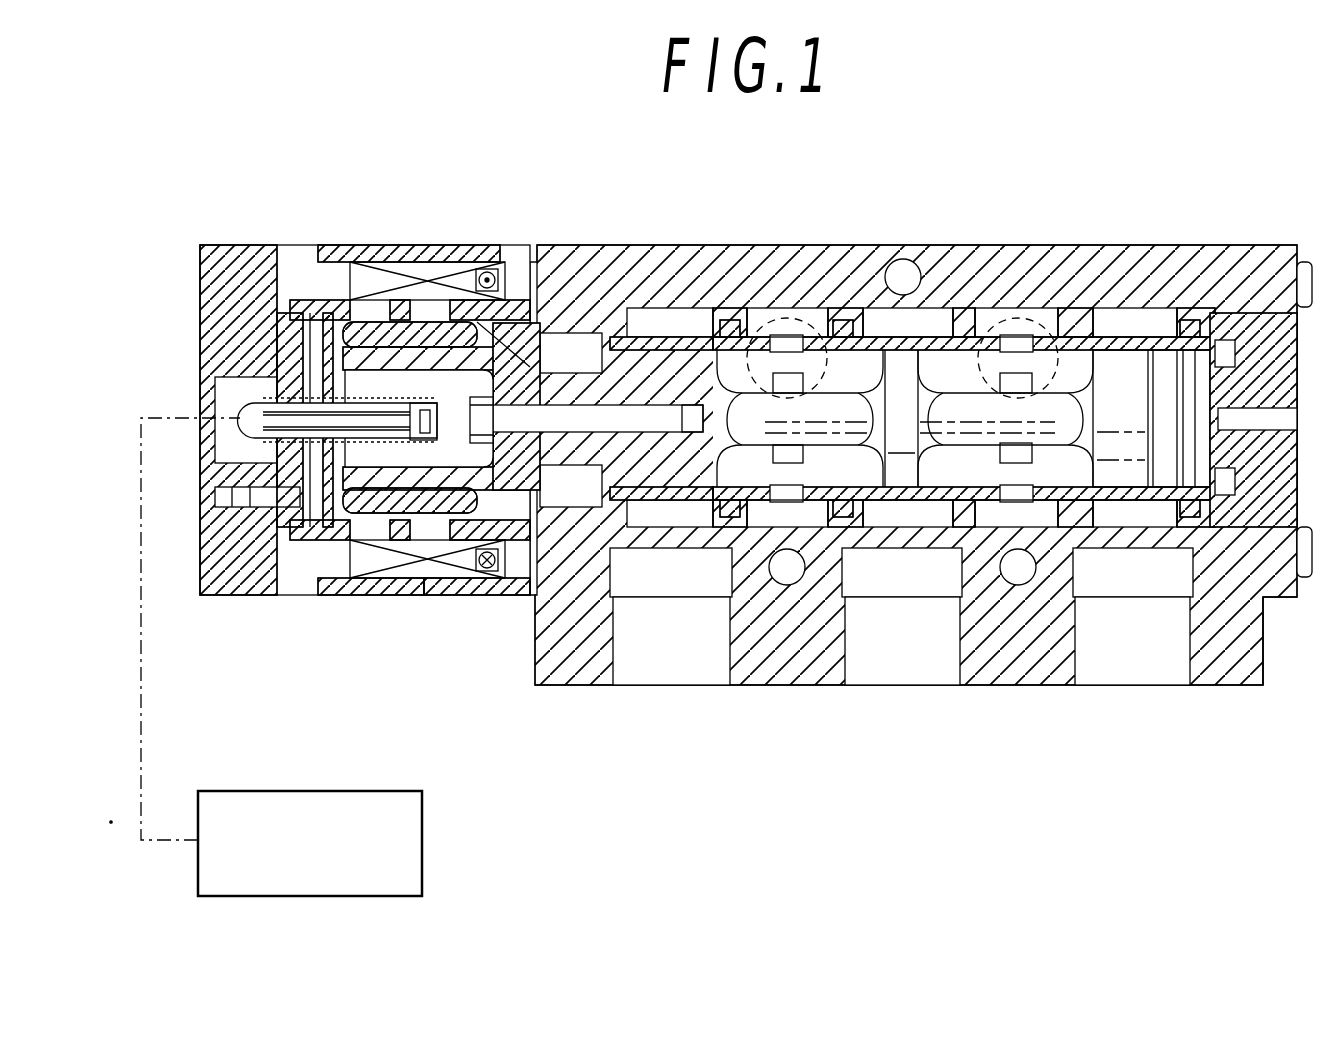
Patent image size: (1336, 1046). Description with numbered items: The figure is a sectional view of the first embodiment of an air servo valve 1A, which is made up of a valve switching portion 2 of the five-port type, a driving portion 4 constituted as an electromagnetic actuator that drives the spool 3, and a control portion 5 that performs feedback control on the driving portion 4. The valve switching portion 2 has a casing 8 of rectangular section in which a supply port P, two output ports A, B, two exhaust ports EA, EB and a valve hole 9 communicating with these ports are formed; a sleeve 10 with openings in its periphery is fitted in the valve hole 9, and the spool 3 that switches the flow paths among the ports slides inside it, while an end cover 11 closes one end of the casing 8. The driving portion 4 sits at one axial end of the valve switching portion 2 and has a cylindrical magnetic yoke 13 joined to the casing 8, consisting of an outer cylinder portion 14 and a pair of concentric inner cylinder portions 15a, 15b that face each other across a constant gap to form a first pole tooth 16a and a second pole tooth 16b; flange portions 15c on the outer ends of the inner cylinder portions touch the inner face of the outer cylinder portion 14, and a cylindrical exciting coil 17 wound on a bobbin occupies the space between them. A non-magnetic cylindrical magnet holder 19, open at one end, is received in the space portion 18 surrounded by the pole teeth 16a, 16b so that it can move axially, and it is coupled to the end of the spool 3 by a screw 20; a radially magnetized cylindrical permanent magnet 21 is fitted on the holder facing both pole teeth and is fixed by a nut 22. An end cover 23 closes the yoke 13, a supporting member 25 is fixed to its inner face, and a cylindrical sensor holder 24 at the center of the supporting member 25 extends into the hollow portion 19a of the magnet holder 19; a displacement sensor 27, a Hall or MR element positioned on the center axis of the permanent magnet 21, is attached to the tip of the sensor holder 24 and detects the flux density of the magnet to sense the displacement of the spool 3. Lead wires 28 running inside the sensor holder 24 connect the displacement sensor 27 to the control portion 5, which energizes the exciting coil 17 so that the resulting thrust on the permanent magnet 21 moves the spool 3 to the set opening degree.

The air servo valve 1A is at (1230, 392).
The valve switching portion 2 is at (964, 331).
The spool 3 is at (990, 245).
The driving portion 4 is at (365, 362).
The control portion 5 is at (298, 858).
The casing 8 is at (732, 245).
The valve hole 9 is at (942, 245).
The sleeve 10 is at (665, 245).
The end cover 11 is at (1279, 245).
The yoke 13 is at (403, 240).
The outer cylinder portion 14 is at (472, 245).
The inner cylinder portion 15a is at (355, 595).
The inner cylinder portion 15b is at (463, 595).
The flange portion 15c is at (338, 245).
The first pole tooth 16a is at (375, 245).
The second pole tooth 16b is at (495, 245).
The exciting coil 17 is at (418, 245).
The space portion 18 is at (508, 595).
The magnet holder 19 is at (465, 595).
The hollow portion 19a is at (300, 595).
The screw 20 is at (438, 595).
The permanent magnet 21 is at (375, 595).
The nut 22 is at (332, 595).
The end cover 23 is at (280, 300).
The sensor holder 24 is at (262, 400).
The supporting member 25 is at (240, 270).
The displacement sensor 27 is at (412, 595).
The lead wires 28 is at (262, 438).
The output port A is at (789, 300).
The output port B is at (1022, 300).
The exhaust port EA is at (676, 668).
The supply port P is at (912, 668).
The exhaust port EB is at (1137, 668).